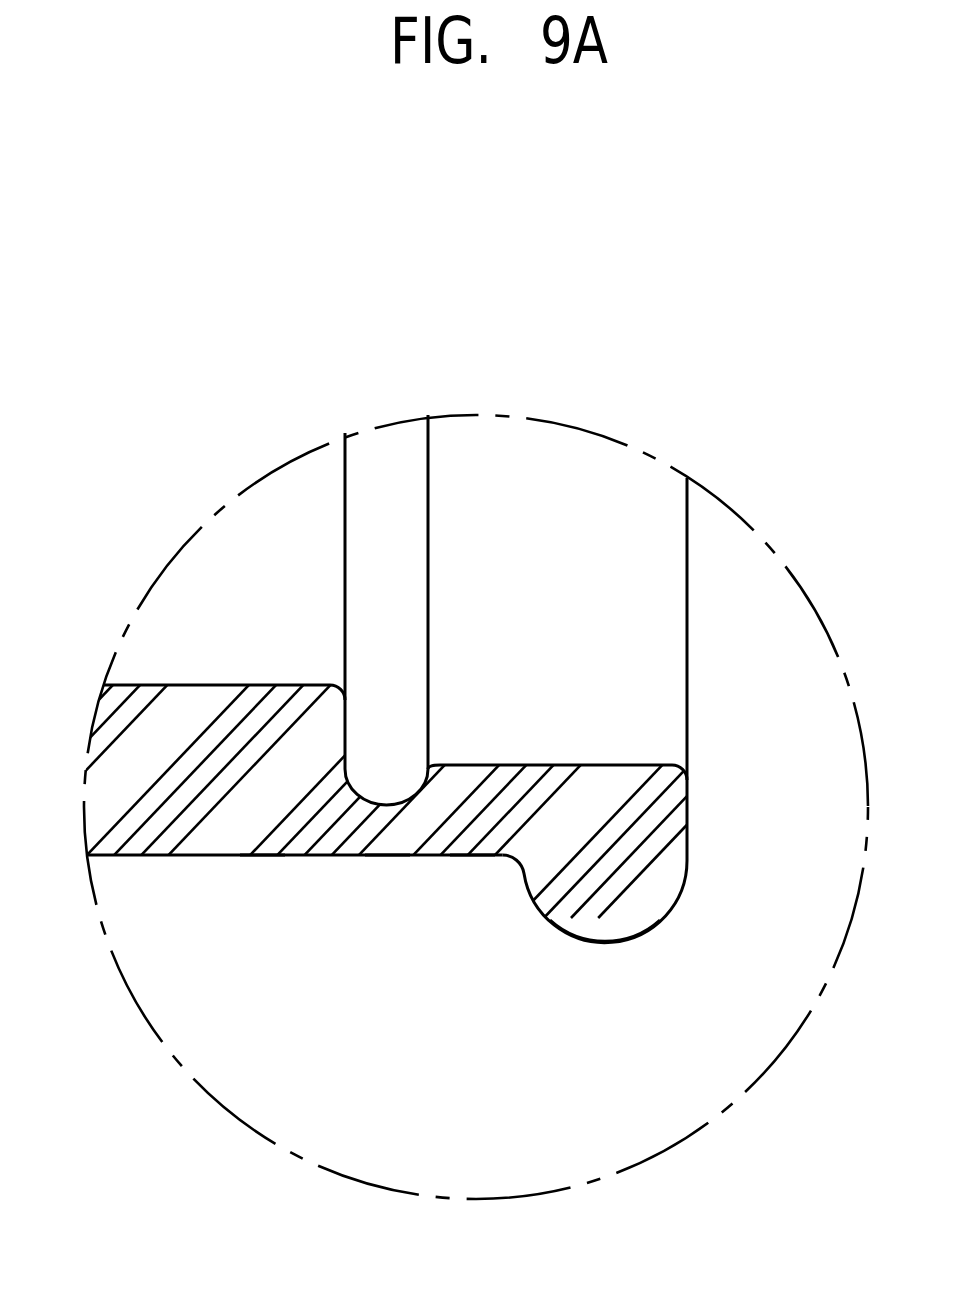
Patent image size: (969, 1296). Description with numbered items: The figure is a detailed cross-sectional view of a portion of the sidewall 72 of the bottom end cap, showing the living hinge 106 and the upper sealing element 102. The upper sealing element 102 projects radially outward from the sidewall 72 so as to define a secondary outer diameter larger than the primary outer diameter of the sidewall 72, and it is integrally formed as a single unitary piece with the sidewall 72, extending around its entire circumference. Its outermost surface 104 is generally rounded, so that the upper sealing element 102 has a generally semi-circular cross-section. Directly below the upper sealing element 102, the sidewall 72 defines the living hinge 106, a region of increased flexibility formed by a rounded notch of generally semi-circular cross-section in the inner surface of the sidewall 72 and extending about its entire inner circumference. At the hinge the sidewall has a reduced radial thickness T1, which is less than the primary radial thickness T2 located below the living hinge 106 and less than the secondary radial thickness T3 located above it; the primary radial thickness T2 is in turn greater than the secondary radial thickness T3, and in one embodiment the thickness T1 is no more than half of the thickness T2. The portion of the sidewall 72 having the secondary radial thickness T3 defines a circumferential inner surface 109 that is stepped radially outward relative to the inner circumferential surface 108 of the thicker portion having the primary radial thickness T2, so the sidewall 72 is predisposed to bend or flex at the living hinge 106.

The sidewall 72 is at (140, 855).
The upper sealing element 102 is at (685, 935).
The outermost surface 104 is at (606, 940).
The living hinge 106 is at (387, 770).
The inner circumferential surface 108 is at (242, 650).
The circumferential inner surface 109 is at (602, 765).
The radial thickness T1 is at (387, 893).
The primary radial thickness T2 is at (262, 893).
The secondary radial thickness T3 is at (473, 893).